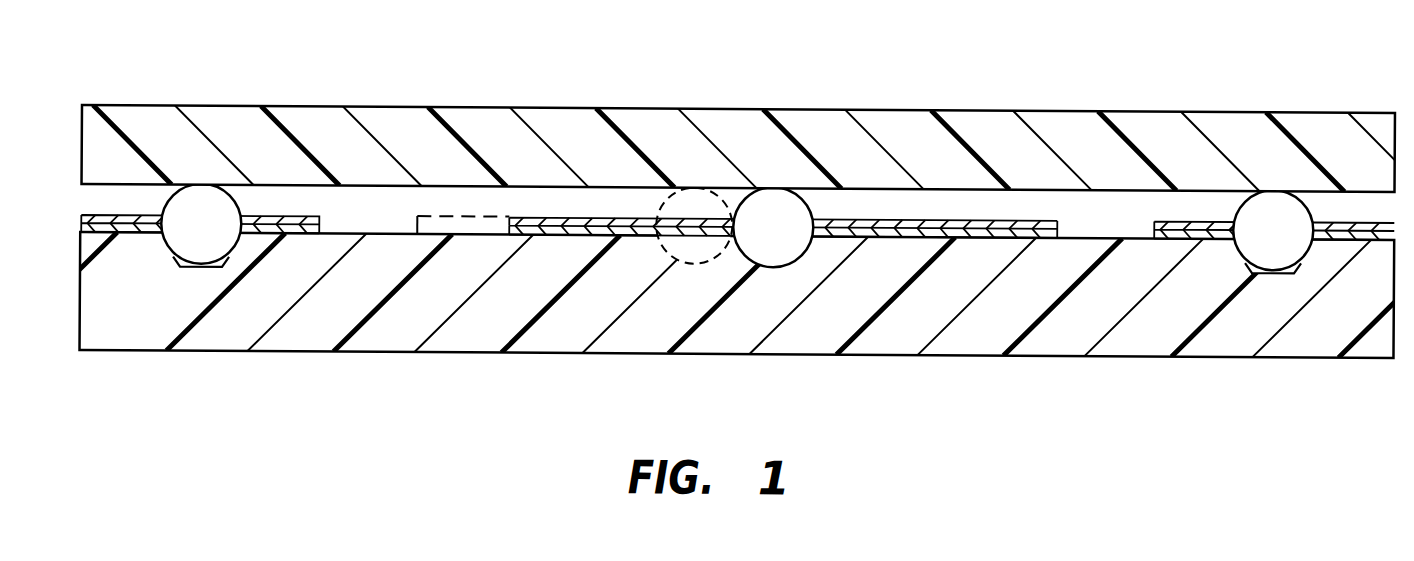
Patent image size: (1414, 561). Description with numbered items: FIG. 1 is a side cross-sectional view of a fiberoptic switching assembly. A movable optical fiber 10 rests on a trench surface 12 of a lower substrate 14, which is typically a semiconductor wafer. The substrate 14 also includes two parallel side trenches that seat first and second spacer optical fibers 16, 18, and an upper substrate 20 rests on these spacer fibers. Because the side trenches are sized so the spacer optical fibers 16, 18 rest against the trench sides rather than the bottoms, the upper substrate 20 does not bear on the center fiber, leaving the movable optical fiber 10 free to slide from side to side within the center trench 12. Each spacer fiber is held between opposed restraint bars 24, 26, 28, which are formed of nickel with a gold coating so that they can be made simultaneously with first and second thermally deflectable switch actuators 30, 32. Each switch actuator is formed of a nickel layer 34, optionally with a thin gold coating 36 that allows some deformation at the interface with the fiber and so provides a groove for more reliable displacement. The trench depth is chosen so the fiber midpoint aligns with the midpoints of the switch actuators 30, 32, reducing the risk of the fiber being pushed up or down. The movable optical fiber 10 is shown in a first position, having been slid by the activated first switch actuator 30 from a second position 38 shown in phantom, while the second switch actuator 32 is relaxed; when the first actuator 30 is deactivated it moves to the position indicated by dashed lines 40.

The movable optical fiber 10 is at (790, 241).
The trench surface 12 is at (732, 245).
The substrate 14 is at (482, 315).
The first spacer optical fiber 16 is at (202, 240).
The second spacer optical fiber 18 is at (1275, 243).
The upper substrate 20 is at (1163, 126).
The restraint bar 24 is at (273, 226).
The restraint bar 26 is at (1217, 236).
The restraint bar 28 is at (1343, 229).
The first thermally deflectable switch actuator 30 is at (580, 239).
The second thermally deflectable switch actuator 32 is at (912, 240).
The nickel layer 34 is at (592, 219).
The gold coating 36 is at (563, 214).
The second position 38 is at (668, 196).
The dashed lines 40 is at (437, 211).